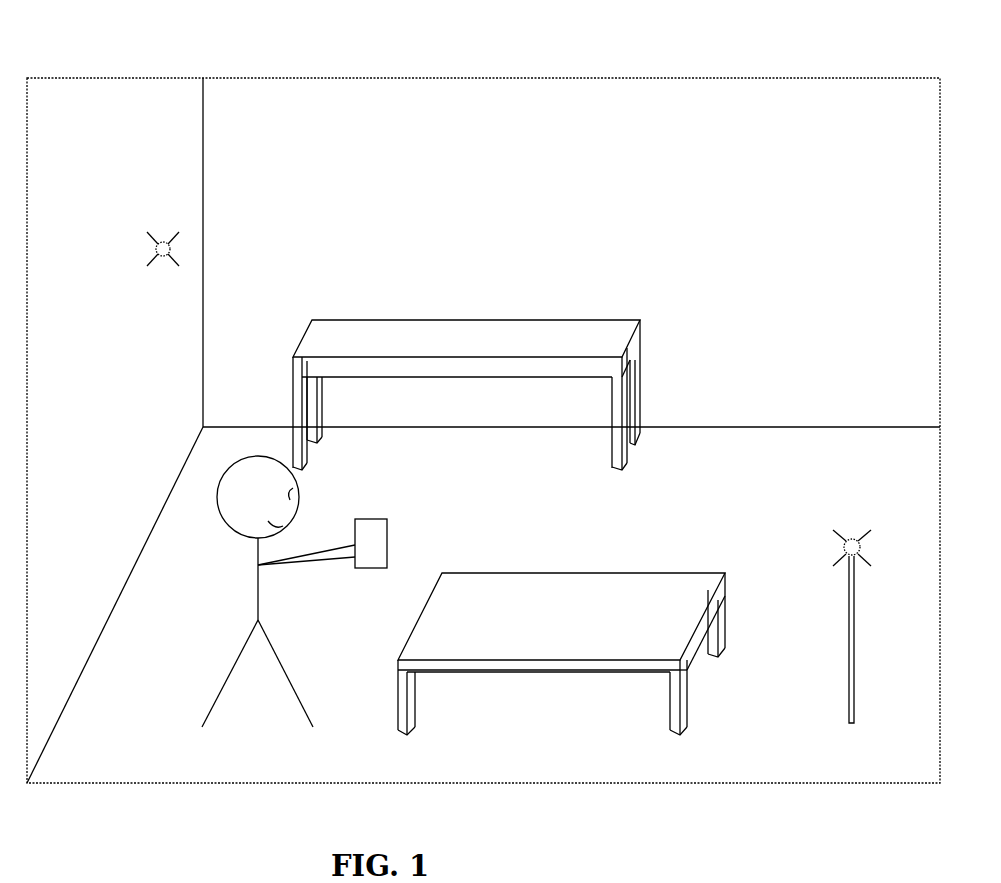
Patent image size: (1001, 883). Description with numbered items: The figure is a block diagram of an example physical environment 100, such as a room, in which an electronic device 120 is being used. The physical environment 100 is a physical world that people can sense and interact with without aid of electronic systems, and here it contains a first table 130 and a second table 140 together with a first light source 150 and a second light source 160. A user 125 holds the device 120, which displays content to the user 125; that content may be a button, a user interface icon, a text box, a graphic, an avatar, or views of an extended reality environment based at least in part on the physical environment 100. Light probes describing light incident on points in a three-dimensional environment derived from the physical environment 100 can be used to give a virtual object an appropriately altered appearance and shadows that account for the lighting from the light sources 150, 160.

The physical environment 100 is at (97, 36).
The device 120 is at (387, 542).
The user 125 is at (258, 580).
The first table 130 is at (643, 337).
The second table 140 is at (682, 572).
The first light source 150 is at (163, 240).
The second light source 160 is at (852, 538).